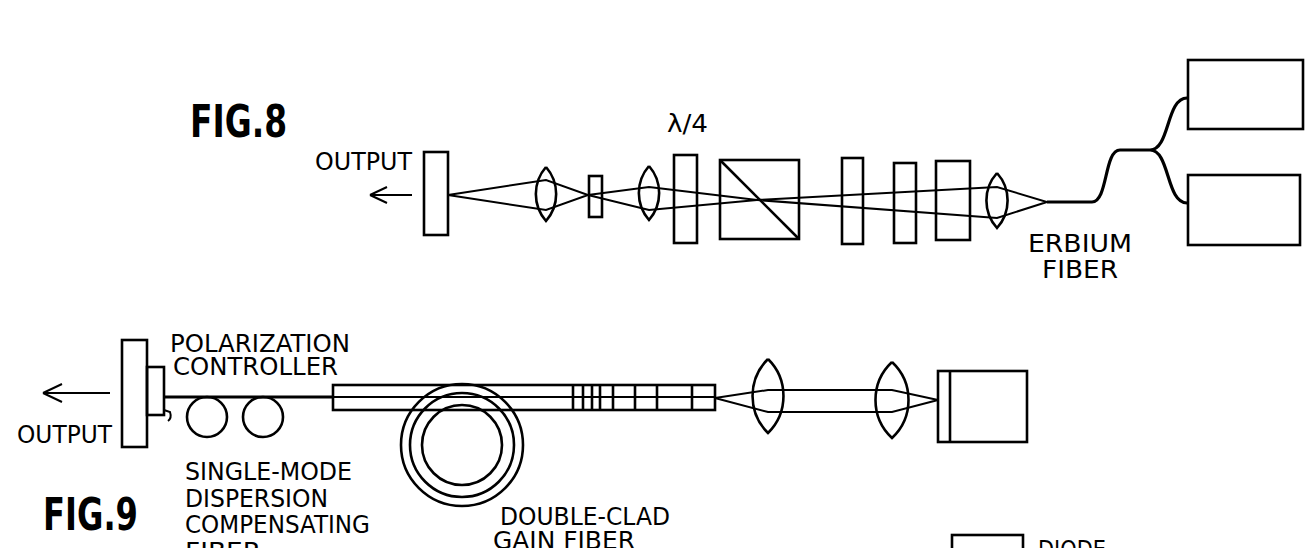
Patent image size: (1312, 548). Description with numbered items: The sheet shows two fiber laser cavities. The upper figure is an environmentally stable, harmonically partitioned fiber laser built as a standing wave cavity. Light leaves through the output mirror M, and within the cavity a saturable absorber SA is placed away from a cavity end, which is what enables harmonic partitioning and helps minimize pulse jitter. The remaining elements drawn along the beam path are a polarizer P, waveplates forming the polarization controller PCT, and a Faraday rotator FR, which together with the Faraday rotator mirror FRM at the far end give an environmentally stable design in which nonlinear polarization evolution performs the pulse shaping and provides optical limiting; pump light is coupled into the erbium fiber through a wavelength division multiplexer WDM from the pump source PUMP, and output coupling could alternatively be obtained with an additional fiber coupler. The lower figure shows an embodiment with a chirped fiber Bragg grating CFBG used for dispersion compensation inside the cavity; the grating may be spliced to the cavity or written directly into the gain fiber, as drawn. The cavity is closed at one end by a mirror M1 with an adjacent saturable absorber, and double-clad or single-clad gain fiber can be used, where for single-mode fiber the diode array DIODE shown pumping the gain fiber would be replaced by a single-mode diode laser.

In FIG. 8, the output mirror M is at (436, 213).
In FIG. 8, the saturable absorber SA is at (594, 177).
In FIG. 9, the saturable absorber SA is at (163, 408).
In FIG. 8, the polarizer P is at (759, 182).
In FIG. 8, the polarization controller waveplates PCT is at (881, 203).
In FIG. 8, the Faraday rotator FR is at (959, 222).
In FIG. 8, the wavelength division multiplexer WDM is at (1117, 150).
In FIG. 8, the pump source PUMP is at (1245, 94).
In FIG. 8, the Faraday rotator mirror FRM is at (1244, 210).
In FIG. 9, the mirror M1 is at (134, 373).
In FIG. 9, the chirped fiber Bragg grating CFBG is at (524, 420).
In FIG. 9, the diode array DIODE is at (1045, 393).